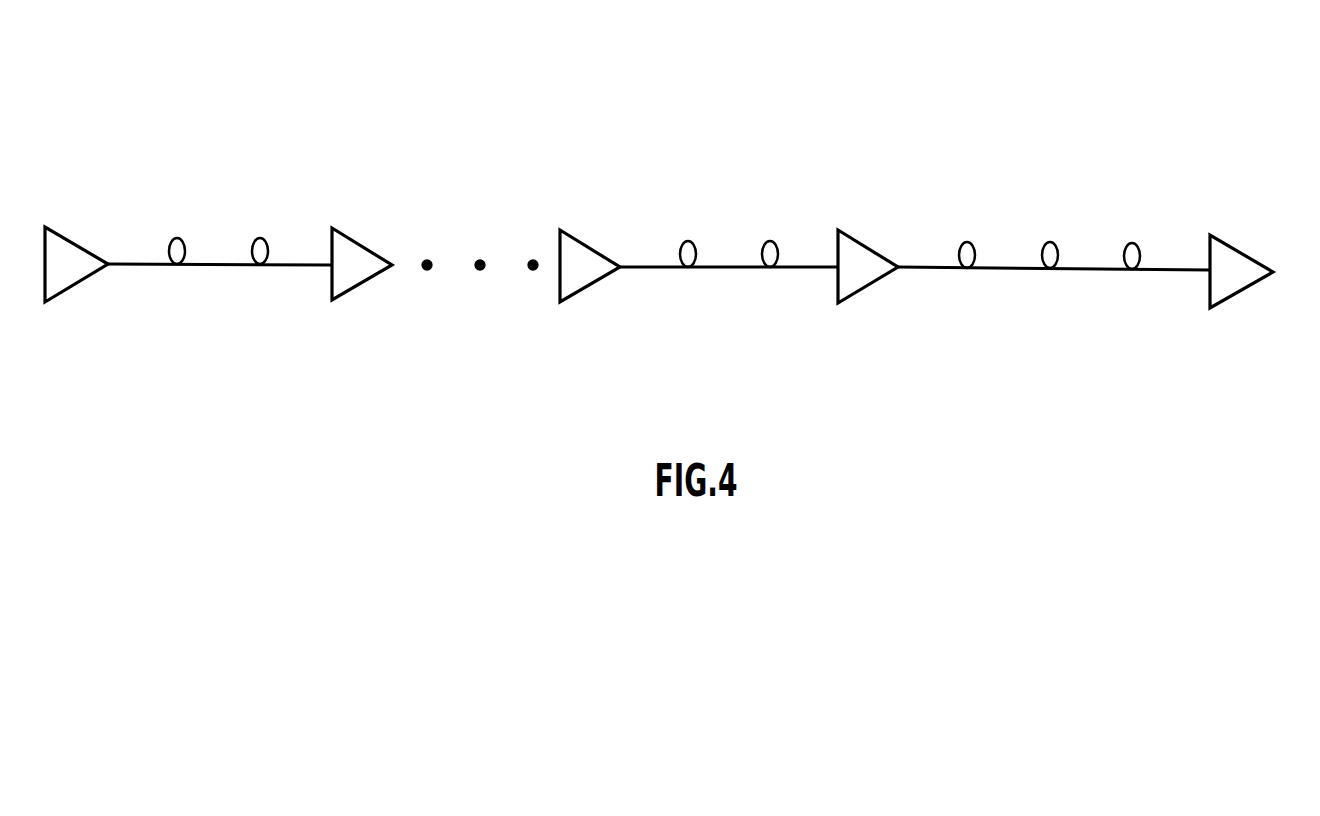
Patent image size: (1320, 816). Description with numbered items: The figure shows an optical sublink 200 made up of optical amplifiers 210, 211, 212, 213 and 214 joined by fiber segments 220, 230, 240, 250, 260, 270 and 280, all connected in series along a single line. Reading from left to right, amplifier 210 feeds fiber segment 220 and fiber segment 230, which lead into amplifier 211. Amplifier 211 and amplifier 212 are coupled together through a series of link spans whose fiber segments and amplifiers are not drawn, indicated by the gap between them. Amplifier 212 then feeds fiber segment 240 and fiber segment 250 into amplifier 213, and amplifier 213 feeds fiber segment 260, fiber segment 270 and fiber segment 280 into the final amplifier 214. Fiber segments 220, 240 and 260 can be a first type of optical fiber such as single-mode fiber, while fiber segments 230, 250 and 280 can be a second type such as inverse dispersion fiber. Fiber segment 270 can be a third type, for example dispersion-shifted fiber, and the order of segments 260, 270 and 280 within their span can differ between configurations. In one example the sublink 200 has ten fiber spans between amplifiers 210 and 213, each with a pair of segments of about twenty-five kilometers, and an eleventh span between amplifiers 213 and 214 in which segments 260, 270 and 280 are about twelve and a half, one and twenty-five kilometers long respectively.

The optical sublink 200 is at (583, 95).
The optical amplifier 210 is at (75, 283).
The optical amplifier 211 is at (360, 285).
The optical amplifier 212 is at (587, 287).
The optical amplifier 213 is at (867, 287).
The optical amplifier 214 is at (1238, 293).
The fiber segment 220 is at (184, 243).
The fiber segment 230 is at (267, 243).
The fiber segment 240 is at (695, 246).
The fiber segment 250 is at (777, 246).
The fiber segment 260 is at (974, 247).
The fiber segment 270 is at (1057, 247).
The fiber segment 280 is at (1139, 248).